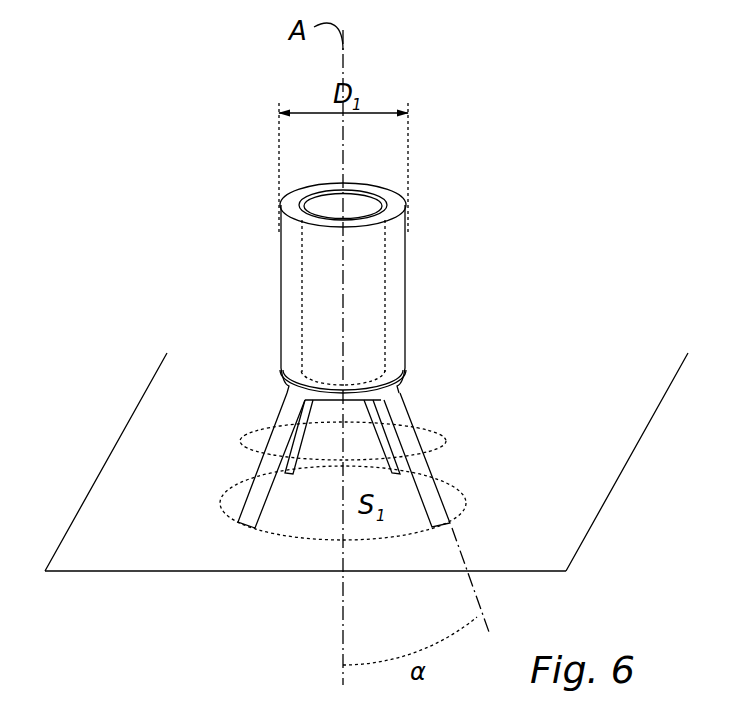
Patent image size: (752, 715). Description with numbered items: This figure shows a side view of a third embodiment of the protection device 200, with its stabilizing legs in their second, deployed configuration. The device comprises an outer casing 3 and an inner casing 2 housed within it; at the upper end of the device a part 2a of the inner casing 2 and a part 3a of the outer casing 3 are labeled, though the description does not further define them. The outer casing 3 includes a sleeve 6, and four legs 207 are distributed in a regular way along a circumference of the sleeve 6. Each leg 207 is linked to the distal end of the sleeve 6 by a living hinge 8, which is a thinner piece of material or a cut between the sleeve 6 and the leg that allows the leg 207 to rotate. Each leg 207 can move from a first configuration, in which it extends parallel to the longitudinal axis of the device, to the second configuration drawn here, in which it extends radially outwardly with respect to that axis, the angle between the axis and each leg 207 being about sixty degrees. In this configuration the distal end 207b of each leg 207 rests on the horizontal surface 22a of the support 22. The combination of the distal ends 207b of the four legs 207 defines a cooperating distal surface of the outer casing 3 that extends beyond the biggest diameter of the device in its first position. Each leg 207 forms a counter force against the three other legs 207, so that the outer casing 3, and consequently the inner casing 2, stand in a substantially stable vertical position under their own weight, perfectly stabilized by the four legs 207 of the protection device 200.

The inner casing 2 is at (300, 275).
The inner tube opening 2a is at (360, 200).
The outer casing 3 is at (415, 305).
The outer tube top rim 3a is at (405, 186).
The sleeve 6 is at (408, 268).
The living hinge 8 is at (410, 372).
The support 22 is at (383, 462).
The horizontal surface 22a is at (168, 517).
The protection device 200 is at (507, 238).
The legs 207 is at (241, 441).
The distal end 207b is at (286, 483).